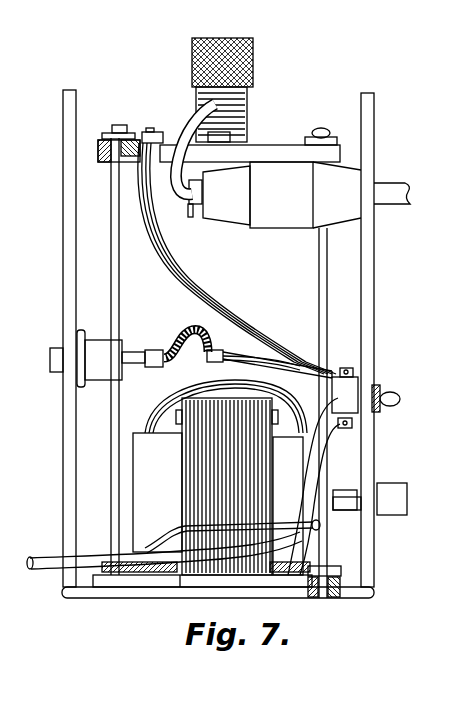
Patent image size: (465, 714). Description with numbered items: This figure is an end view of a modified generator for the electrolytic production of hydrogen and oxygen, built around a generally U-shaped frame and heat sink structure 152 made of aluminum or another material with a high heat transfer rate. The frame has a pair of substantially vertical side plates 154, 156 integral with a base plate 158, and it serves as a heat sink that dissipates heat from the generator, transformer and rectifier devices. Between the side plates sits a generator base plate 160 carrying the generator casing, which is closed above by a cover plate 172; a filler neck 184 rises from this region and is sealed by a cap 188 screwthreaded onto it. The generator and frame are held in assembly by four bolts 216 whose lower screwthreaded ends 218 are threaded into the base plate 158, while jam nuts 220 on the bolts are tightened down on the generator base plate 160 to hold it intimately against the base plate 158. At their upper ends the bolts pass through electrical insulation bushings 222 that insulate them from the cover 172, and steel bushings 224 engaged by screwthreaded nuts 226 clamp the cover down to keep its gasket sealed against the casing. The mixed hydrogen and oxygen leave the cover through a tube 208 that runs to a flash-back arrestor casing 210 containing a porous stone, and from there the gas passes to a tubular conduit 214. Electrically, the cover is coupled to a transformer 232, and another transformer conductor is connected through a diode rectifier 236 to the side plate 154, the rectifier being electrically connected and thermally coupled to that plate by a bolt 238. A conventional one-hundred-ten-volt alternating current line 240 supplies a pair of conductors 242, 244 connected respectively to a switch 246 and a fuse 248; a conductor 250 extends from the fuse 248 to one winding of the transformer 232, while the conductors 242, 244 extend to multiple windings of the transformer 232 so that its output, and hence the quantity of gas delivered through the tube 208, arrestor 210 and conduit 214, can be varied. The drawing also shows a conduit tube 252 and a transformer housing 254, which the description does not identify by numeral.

The frame and heat sink structure 152 is at (218, 360).
The side plate 154 is at (66, 163).
The side plate 156 is at (371, 134).
The base plate 158 is at (345, 599).
The generator base plate 160 is at (128, 580).
The cover plate 172 is at (268, 150).
The filler neck 184 is at (247, 97).
The cap 188 is at (244, 60).
The tube 208 is at (196, 102).
The flash-back arrestor casing 210 is at (266, 214).
The tubular conduit 214 is at (390, 191).
The bolts 216 is at (112, 231).
The lower screwthreaded ends 218 is at (320, 600).
The jam nuts 220 is at (342, 569).
The electrical insulation bushings 222 is at (100, 148).
The steel bushings 224 is at (110, 126).
The screwthreaded nuts 226 is at (128, 132).
The transformer 232 is at (170, 477).
The diode rectifier 236 is at (100, 345).
The bolt 238 is at (52, 364).
The alternating current line 240 is at (42, 558).
The conductor 242 is at (304, 454).
The conductor 244 is at (316, 484).
The switch 246 is at (343, 387).
The fuse 248 is at (383, 492).
The conductor 250 is at (231, 519).
The conduit tube 252 is at (301, 363).
The transformer housing 254 is at (157, 492).